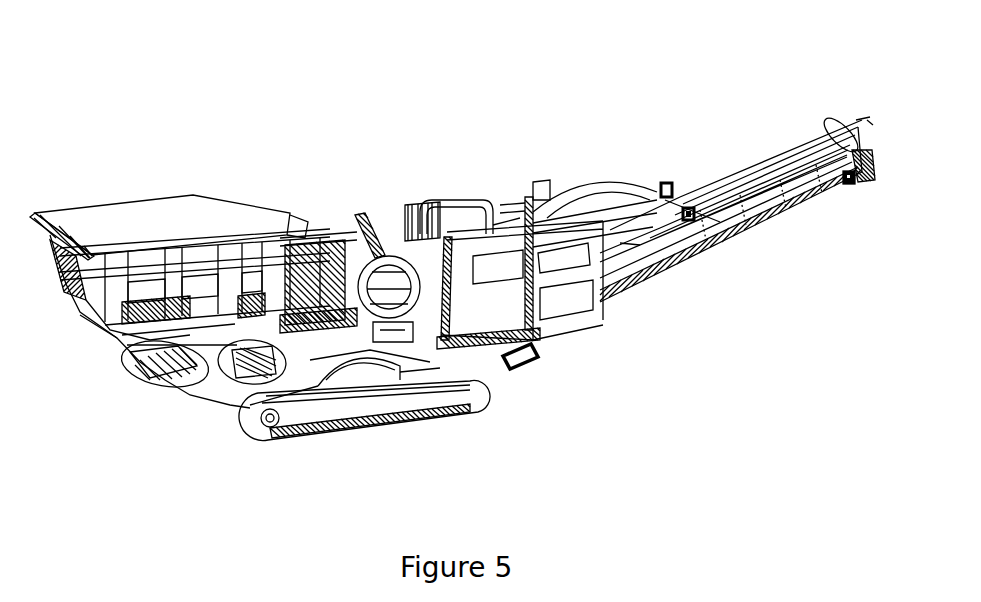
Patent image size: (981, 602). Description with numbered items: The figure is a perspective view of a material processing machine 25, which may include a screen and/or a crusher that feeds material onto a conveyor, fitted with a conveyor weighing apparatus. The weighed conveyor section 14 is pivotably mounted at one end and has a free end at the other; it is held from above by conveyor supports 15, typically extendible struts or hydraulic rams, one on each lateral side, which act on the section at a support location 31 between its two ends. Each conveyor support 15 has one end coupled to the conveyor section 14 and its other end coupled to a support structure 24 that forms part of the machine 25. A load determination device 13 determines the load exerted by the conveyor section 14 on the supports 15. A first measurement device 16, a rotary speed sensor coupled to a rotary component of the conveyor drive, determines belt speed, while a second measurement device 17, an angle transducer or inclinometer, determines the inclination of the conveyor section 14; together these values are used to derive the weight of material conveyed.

The material processing machine 25 is at (187, 85).
The conveyor section 14 is at (638, 278).
The support location 31 is at (750, 227).
The conveyor support 15 is at (723, 222).
The support structure 24 is at (605, 218).
The load determination device 13 is at (668, 181).
The first measurement device 16 is at (850, 183).
The second measurement device 17 is at (523, 362).